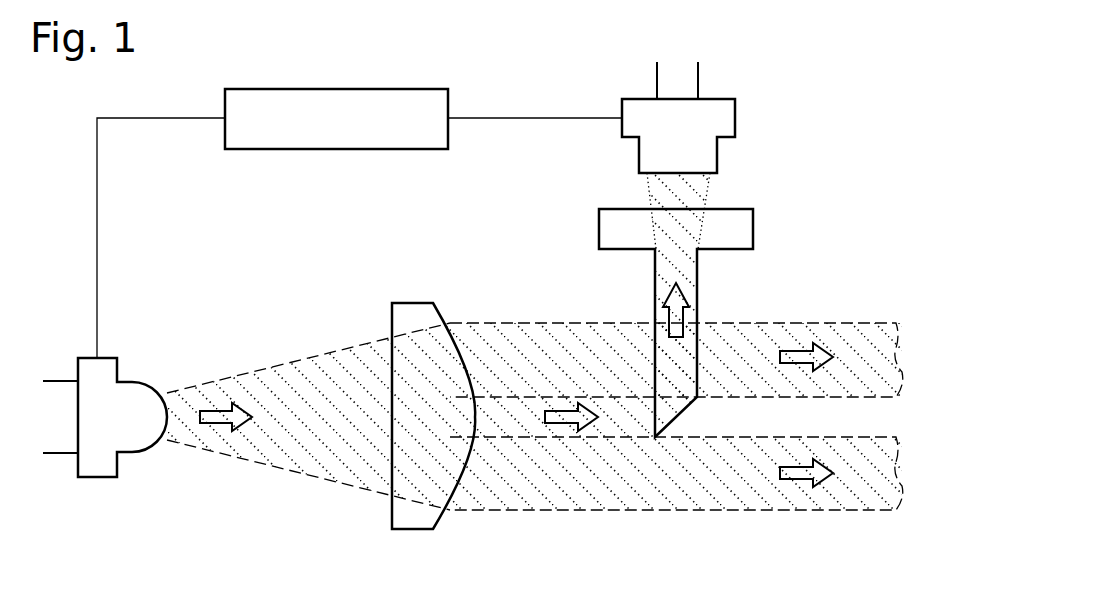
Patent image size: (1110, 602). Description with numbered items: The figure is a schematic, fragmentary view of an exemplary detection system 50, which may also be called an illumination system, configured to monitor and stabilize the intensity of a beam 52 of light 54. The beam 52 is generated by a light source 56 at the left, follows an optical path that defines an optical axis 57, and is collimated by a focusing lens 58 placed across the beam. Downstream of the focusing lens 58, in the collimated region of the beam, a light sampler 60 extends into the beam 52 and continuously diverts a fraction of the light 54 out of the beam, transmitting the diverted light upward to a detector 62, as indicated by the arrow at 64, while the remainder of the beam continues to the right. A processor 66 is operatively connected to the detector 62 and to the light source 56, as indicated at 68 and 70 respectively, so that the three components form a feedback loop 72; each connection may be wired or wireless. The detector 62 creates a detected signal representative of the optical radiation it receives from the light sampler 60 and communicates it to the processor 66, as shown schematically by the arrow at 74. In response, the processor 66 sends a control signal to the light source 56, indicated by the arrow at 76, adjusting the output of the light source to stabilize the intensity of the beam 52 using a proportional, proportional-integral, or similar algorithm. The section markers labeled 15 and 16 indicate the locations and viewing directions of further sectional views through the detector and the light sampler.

The detection system 50 is at (283, 28).
The beam 52 is at (305, 352).
The light 54 is at (272, 440).
The light source 56 is at (105, 358).
The optical axis 57 is at (302, 417).
The focusing lens 58 is at (418, 303).
The light sampler 60 is at (753, 229).
The detector 62 is at (735, 118).
The diverted light 64 is at (665, 318).
The processor 66 is at (338, 89).
The connection to detector 68 is at (533, 118).
The connection to light source 70 is at (162, 118).
The feedback loop 72 is at (408, 223).
The detected signal arrow 74 is at (528, 100).
The control signal arrow 76 is at (77, 262).
The section line 15 is at (623, 194).
The section line 16 is at (716, 283).